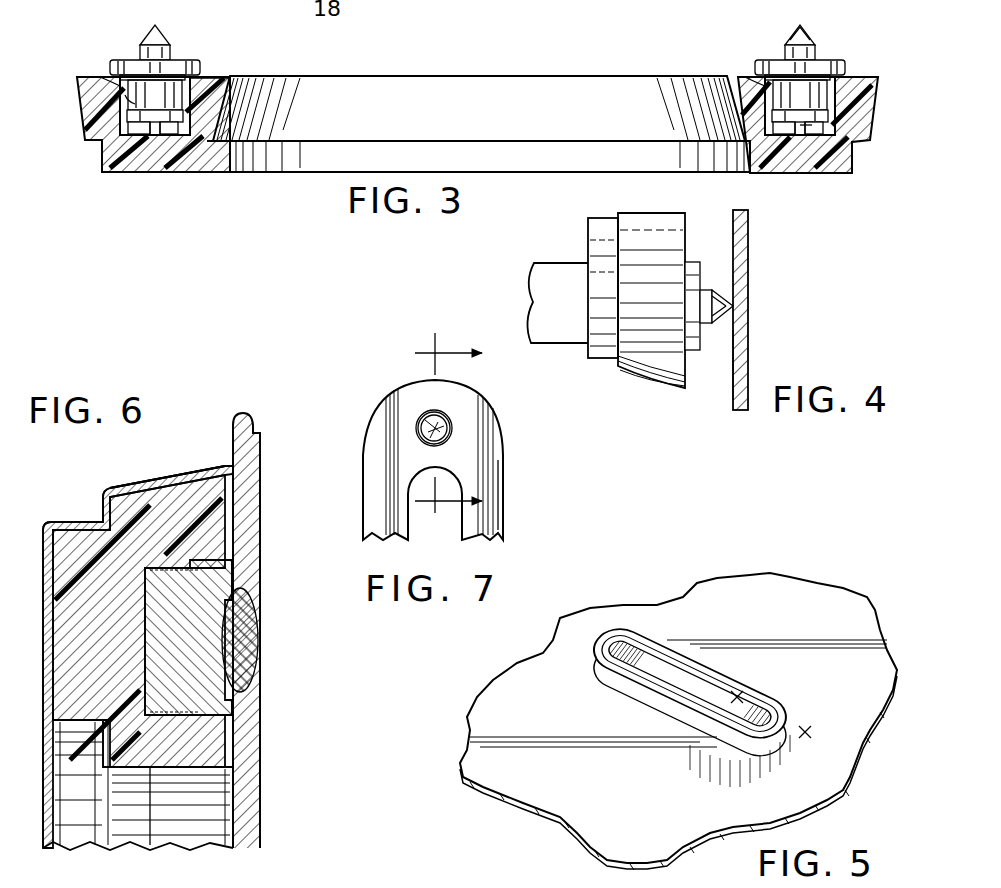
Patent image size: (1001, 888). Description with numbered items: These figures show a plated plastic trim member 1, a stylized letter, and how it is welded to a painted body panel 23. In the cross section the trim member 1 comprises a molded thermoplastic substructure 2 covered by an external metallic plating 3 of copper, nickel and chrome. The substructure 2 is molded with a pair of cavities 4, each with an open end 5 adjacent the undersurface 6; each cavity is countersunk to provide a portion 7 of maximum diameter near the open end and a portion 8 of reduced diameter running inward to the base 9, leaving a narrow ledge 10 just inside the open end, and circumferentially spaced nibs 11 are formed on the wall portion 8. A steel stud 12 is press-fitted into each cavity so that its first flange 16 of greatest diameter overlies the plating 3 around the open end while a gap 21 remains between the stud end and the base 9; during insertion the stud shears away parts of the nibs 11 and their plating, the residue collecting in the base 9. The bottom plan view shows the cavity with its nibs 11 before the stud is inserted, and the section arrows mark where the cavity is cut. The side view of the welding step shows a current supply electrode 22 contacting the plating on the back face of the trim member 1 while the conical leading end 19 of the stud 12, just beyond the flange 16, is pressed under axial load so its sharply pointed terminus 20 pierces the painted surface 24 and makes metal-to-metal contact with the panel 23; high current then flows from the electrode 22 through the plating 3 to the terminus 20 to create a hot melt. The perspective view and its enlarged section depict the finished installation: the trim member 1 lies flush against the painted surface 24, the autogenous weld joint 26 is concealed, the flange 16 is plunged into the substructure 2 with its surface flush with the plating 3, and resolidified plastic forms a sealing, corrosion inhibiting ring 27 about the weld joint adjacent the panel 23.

In FIG. 3, the trim member 1 is at (306, 180).
In FIG. 4, the trim member 1 is at (640, 376).
In FIG. 7, the trim member 1 is at (383, 398).
In FIG. 6, the trim member 1 is at (335, 887).
In FIG. 5, the trim member 1 is at (714, 665).
In FIG. 3, the substructure 2 is at (166, 152).
In FIG. 6, the substructure 2 is at (91, 580).
In FIG. 3, the metallic plating 3 is at (466, 120).
In FIG. 7, the metallic plating 3 is at (490, 465).
In FIG. 6, the metallic plating 3 is at (140, 487).
In FIG. 3, the cavities 4 is at (124, 115).
In FIG. 3, the open end 5 is at (98, 77).
In FIG. 7, the open end 5 is at (420, 440).
In FIG. 3, the undersurface 6 is at (194, 78).
In FIG. 6, the undersurface 6 is at (236, 490).
In FIG. 5, the undersurface 6 is at (753, 689).
In FIG. 3, the portion of maximum diameter 7 is at (182, 68).
In FIG. 3, the portion of reduced diameter 8 is at (133, 137).
In FIG. 7, the portion of reduced diameter 8 is at (448, 425).
In FIG. 6, the portion of reduced diameter 8 is at (216, 887).
In FIG. 3, the base 9 is at (170, 126).
In FIG. 3, the ledge 10 is at (124, 97).
In FIG. 6, the ledge 10 is at (180, 887).
In FIG. 3, the nibs 11 is at (813, 128).
In FIG. 7, the nibs 11 is at (446, 420).
In FIG. 3, the stud 12 is at (828, 46).
In FIG. 4, the stud 12 is at (708, 275).
In FIG. 3, the first flange 16 is at (117, 60).
In FIG. 4, the first flange 16 is at (690, 262).
In FIG. 6, the first flange 16 is at (245, 514).
In FIG. 4, the leading end 19 is at (722, 320).
In FIG. 4, the terminus 20 is at (733, 308).
In FIG. 3, the gap 21 is at (148, 125).
In FIG. 4, the current supply electrode 22 is at (553, 290).
In FIG. 4, the body panel 23 is at (752, 355).
In FIG. 6, the body panel 23 is at (263, 775).
In FIG. 5, the body panel 23 is at (872, 737).
In FIG. 4, the painted surface 24 is at (735, 390).
In FIG. 6, the painted surface 24 is at (262, 505).
In FIG. 5, the painted surface 24 is at (823, 605).
In FIG. 6, the autogenous weld joint 26 is at (246, 633).
In FIG. 6, the sealing ring 27 is at (238, 562).